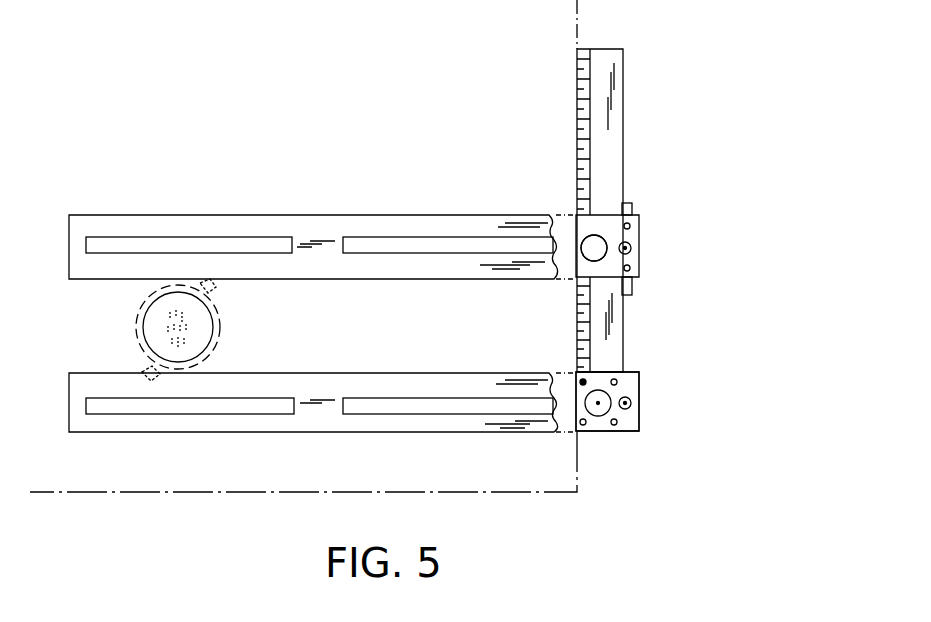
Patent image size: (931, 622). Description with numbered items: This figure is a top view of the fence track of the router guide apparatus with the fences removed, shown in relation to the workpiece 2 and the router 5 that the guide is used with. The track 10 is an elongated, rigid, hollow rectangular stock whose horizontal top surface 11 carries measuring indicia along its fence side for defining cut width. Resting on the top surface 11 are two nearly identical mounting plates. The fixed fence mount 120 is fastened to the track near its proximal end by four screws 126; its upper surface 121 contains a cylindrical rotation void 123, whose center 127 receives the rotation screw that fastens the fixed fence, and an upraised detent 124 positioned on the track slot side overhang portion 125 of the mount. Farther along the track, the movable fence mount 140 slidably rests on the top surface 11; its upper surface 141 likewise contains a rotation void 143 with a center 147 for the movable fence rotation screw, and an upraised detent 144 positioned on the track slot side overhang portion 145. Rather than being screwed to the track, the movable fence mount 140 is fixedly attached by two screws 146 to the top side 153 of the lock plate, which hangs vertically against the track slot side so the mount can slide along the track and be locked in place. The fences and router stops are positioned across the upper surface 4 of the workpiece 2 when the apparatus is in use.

The workpiece 2 is at (362, 119).
The upper surface 4 is at (253, 159).
The router 5 is at (205, 320).
The track 10 is at (605, 52).
The top surface 11 is at (614, 120).
The fixed fence mount 120 is at (649, 399).
The upper surface 121 is at (630, 423).
The rotation void 123 is at (640, 377).
The detent 124 is at (633, 404).
The track slot side overhang portion 125 is at (608, 392).
The screws 126 is at (614, 425).
The center of the rotation void 127 is at (598, 403).
The movable fence mount 140 is at (646, 220).
The upper surface 141 is at (612, 200).
The rotation void 143 is at (594, 248).
The detent 144 is at (633, 247).
The track slot side overhang portion 145 is at (640, 214).
The screws 146 is at (630, 268).
The center of the rotation void 147 is at (578, 215).
The top side 153 is at (632, 289).